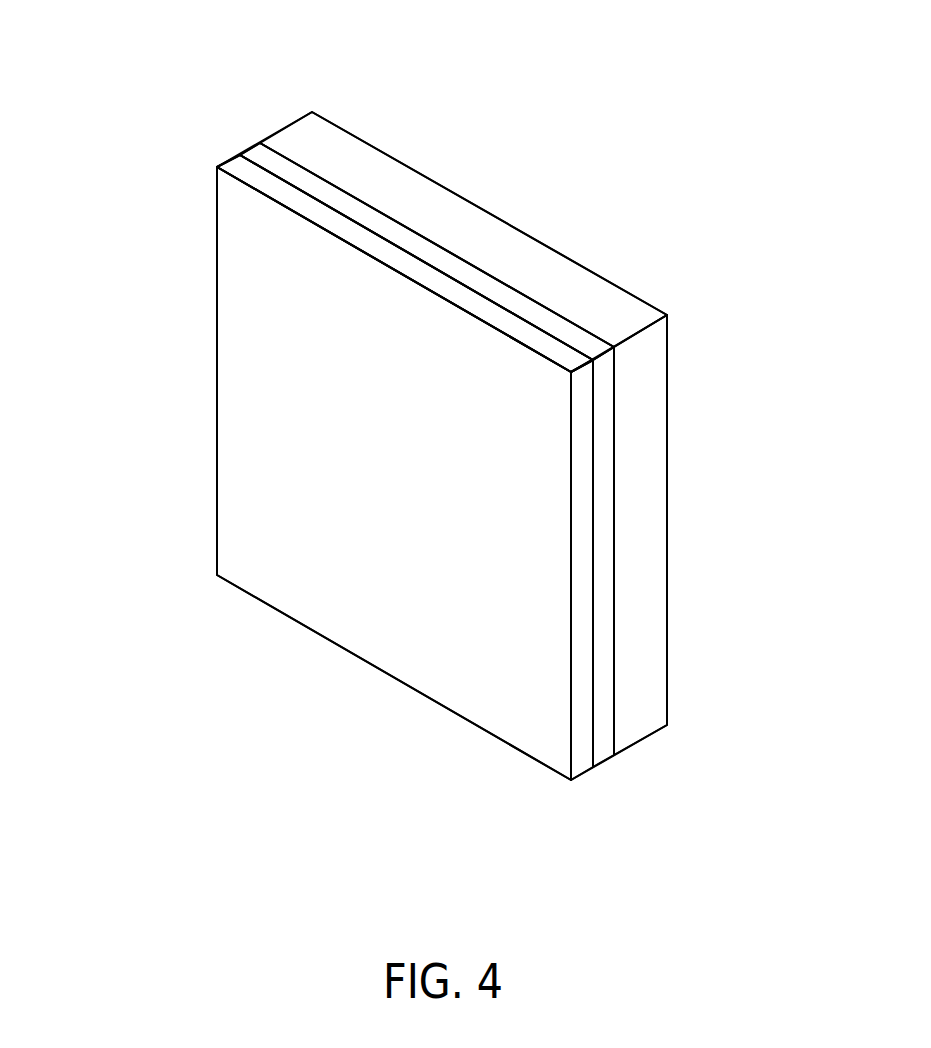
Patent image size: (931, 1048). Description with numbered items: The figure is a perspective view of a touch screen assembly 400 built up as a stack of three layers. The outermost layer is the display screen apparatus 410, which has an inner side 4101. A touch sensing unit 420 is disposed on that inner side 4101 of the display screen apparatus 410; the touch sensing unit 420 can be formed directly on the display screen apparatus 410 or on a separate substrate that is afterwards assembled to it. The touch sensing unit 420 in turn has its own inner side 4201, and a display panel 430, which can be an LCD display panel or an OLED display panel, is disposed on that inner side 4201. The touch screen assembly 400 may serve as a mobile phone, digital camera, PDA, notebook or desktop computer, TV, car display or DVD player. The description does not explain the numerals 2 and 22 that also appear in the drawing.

The light guide plate 2 is at (278, 378).
The light emitting surface of light guide plate 22 is at (308, 490).
The touch screen assembly 400 is at (702, 53).
The display screen apparatus 410 is at (583, 775).
The inner side 4101 is at (432, 267).
The touch sensing unit 420 is at (607, 762).
The inner side 4201 is at (552, 308).
The display panel 430 is at (643, 740).